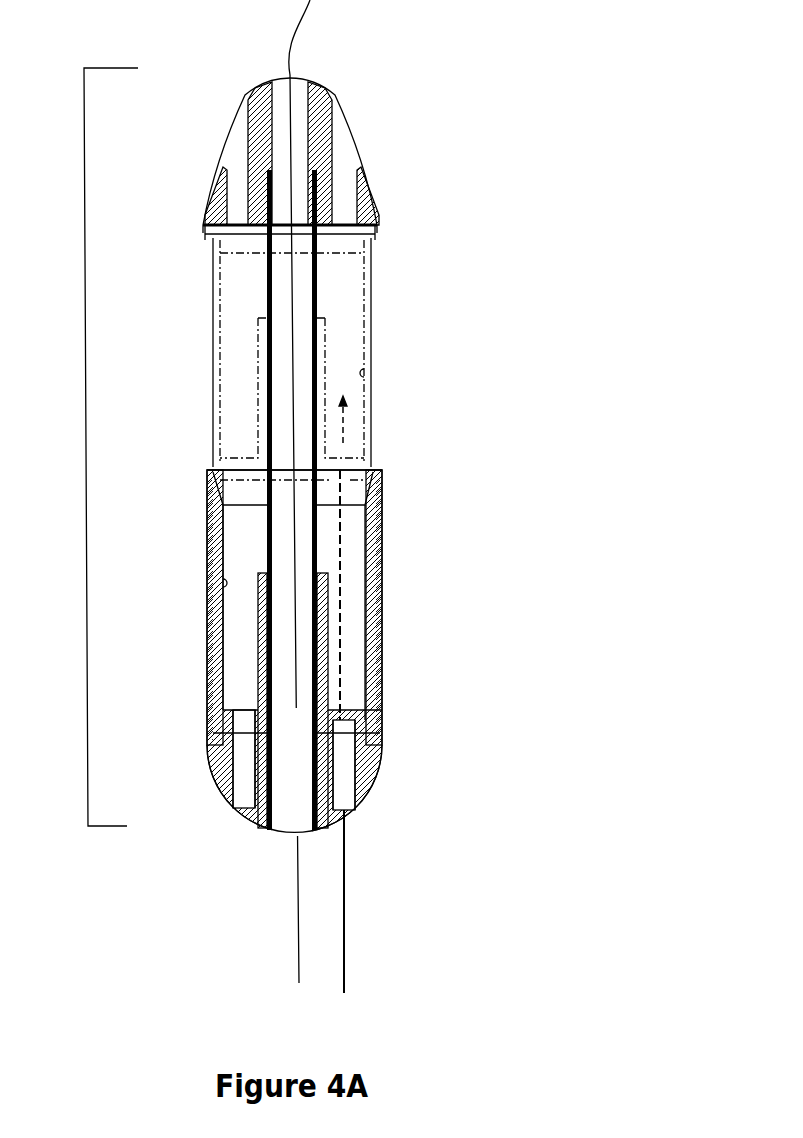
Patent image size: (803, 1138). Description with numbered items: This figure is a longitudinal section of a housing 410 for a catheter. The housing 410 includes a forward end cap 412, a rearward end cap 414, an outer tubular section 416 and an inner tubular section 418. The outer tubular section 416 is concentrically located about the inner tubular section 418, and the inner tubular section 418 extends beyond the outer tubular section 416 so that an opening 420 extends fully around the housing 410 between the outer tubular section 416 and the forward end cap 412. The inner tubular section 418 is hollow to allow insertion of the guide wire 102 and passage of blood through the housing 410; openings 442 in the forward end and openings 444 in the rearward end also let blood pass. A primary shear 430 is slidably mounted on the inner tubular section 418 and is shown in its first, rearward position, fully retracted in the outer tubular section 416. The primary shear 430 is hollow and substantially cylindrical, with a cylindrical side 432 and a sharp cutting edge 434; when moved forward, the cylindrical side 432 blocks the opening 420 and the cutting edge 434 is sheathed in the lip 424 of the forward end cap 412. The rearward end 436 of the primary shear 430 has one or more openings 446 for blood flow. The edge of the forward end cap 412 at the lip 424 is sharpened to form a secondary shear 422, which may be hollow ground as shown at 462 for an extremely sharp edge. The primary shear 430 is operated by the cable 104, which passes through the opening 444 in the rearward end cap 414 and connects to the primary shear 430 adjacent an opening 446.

The housing 410 is at (87, 447).
The forward end cap 412 is at (323, 90).
The opening 442 is at (242, 147).
The secondary shear 422 is at (207, 237).
The lip 424 is at (375, 227).
The inner tubular section 418 is at (263, 300).
The opening 420 is at (372, 341).
The cylindrical side 432 is at (362, 373).
The hollow ground 462 is at (213, 465).
The cutting edge 434 is at (365, 465).
The primary shear 430 is at (208, 540).
The outer tubular section 416 is at (385, 622).
The rearward end 436 is at (247, 723).
The opening 446 is at (208, 738).
The rearward end cap 414 is at (378, 785).
The opening 444 is at (247, 807).
The guide wire 102 is at (297, 922).
The cable 104 is at (345, 920).